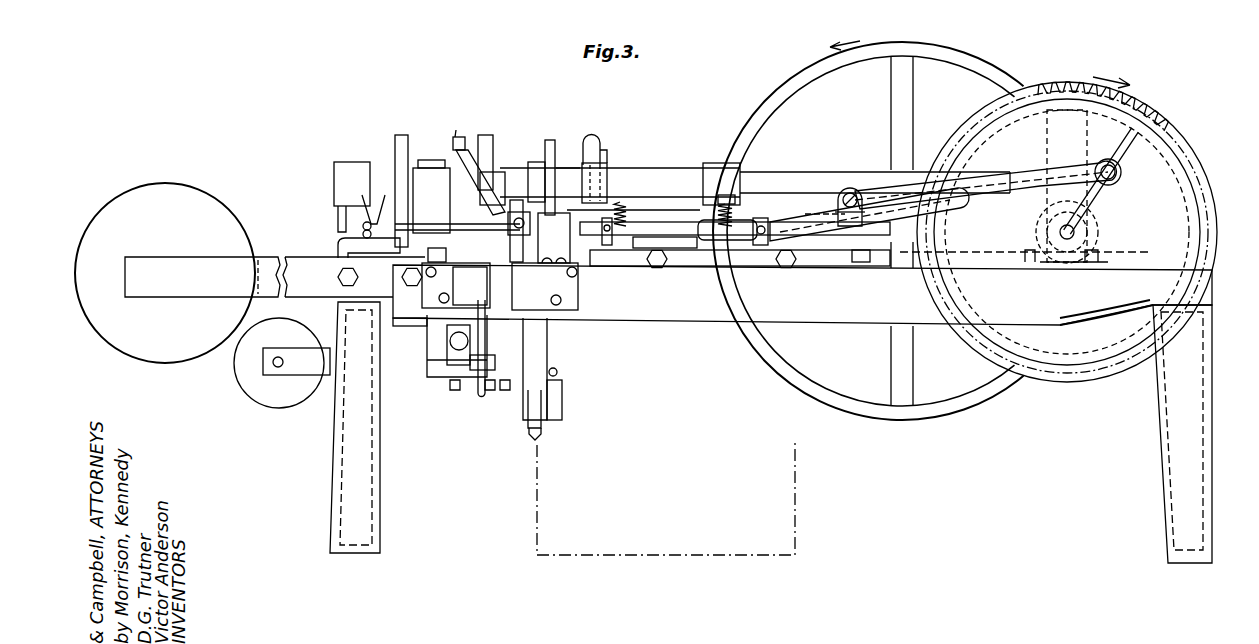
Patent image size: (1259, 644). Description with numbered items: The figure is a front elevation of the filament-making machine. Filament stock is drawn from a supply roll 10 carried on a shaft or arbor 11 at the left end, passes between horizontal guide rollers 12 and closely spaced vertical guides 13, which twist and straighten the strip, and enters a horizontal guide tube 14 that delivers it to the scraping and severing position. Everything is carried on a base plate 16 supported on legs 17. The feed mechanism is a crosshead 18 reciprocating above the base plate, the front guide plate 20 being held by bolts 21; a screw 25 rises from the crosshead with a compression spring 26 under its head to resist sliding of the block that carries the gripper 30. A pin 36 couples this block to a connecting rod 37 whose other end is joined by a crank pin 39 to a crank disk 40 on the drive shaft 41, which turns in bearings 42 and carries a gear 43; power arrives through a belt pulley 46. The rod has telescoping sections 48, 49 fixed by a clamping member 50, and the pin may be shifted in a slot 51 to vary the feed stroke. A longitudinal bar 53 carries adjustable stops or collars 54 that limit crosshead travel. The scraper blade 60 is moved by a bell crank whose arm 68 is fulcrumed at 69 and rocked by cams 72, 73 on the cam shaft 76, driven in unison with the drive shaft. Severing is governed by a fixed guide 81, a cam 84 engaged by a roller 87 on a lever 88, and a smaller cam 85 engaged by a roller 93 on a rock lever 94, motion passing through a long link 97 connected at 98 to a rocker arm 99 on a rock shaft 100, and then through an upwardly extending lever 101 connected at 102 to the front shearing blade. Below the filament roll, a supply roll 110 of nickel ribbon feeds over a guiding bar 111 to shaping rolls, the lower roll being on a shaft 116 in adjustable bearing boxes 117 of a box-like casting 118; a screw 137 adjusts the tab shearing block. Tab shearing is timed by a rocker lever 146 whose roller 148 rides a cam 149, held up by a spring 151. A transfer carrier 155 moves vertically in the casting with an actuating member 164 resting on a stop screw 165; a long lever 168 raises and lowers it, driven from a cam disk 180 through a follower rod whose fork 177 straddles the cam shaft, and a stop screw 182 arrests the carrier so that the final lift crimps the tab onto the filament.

The filament supply roll 10 is at (170, 184).
The shaft or arbor 11 is at (170, 275).
The horizontal guide rollers 12 is at (363, 233).
The vertical guides 13 is at (379, 209).
The horizontal guide tube 14 is at (431, 180).
The base plate 16 is at (802, 288).
The legs 17 is at (378, 468).
The crosshead 18 is at (716, 237).
The front guide plate 20 is at (682, 267).
The bolts 21 is at (850, 263).
The screw 25 is at (735, 199).
The compression spring 26 is at (718, 213).
The gripper 30 is at (644, 249).
The pin 36 is at (806, 228).
The connecting rod 37 is at (834, 200).
The crank pin 39 is at (1108, 164).
The crank disk 40 is at (1106, 319).
The drive shaft 41 is at (1059, 232).
The bearings 42 is at (1022, 268).
The gear 43 is at (1137, 107).
The belt pulley 46 is at (982, 67).
The telescoping section 48 is at (818, 212).
The telescoping section 49 is at (990, 184).
The clamping member 50 is at (852, 191).
The slot 51 is at (1125, 152).
The longitudinal bar 53 is at (742, 242).
The stops or collars 54 is at (606, 247).
The scraper blade 60 is at (510, 250).
The bell crank arm 68 is at (428, 257).
The fulcrum 69 is at (425, 160).
The cam 72 is at (470, 146).
The cam 73 is at (492, 135).
The cam shaft 76 is at (334, 178).
The fixed guide 81 is at (516, 211).
The cam 84 is at (560, 165).
The cam 85 is at (587, 160).
The roller 87 is at (550, 140).
The lever 88 is at (535, 162).
The roller 93 is at (598, 146).
The rock lever 94 is at (607, 156).
The long link 97 is at (480, 398).
The connection 98 is at (497, 362).
The rocker arm 99 is at (480, 306).
The rock shaft 100 is at (440, 292).
The upwardly extending lever 101 is at (536, 312).
The connection 102 is at (555, 238).
The tab ribbon supply roll 110 is at (285, 408).
The guiding bar 111 is at (408, 327).
The shaft 116 is at (448, 366).
The bearing boxes 117 is at (470, 339).
The box-like casting 118 is at (428, 362).
The screw 137 is at (502, 392).
The rocker lever 146 is at (455, 130).
The roller 148 is at (461, 137).
The cam 149 is at (453, 165).
The spring 151 is at (498, 172).
The transfer carrier 155 is at (542, 430).
The actuating member 164 is at (522, 420).
The stop screw 165 is at (530, 441).
The long lever 168 is at (562, 403).
The fork 177 is at (398, 147).
The cam disk 180 is at (395, 158).
The stop screw 182 is at (558, 371).